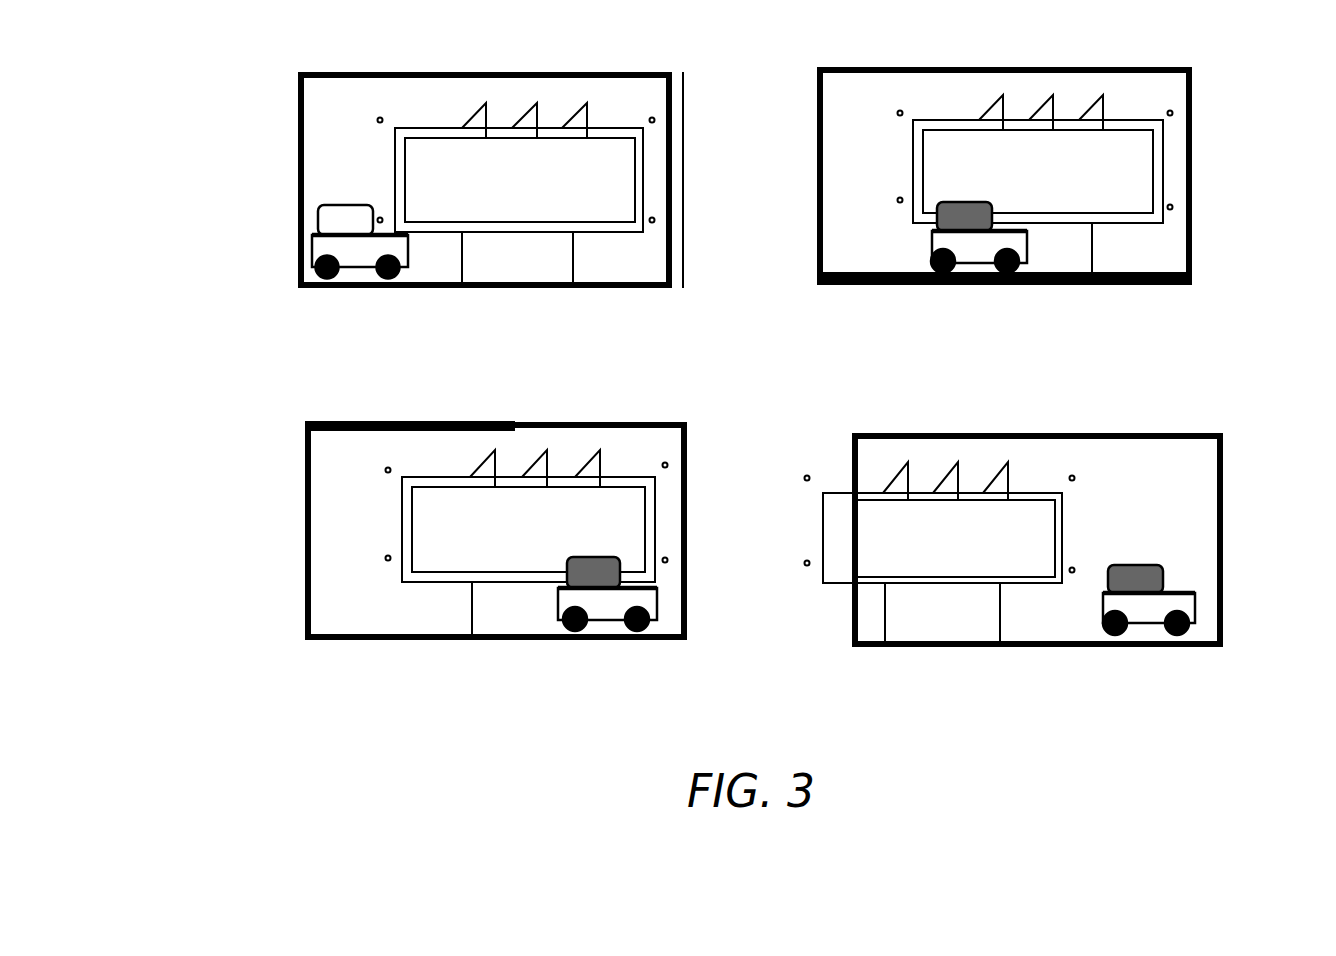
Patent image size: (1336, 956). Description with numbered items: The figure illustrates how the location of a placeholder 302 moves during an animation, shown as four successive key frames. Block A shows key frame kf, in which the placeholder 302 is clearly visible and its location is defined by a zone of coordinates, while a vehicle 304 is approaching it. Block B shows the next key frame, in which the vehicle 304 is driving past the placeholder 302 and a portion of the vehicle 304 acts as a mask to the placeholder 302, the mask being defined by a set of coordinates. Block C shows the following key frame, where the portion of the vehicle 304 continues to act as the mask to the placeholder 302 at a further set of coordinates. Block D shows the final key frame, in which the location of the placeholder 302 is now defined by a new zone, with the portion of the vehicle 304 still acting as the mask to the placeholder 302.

The placeholder 302 is at (775, 369).
The vehicle 304 is at (768, 386).
The Block A is at (492, 220).
The Block B is at (1004, 219).
The Block C is at (494, 592).
The Block D is at (1037, 596).